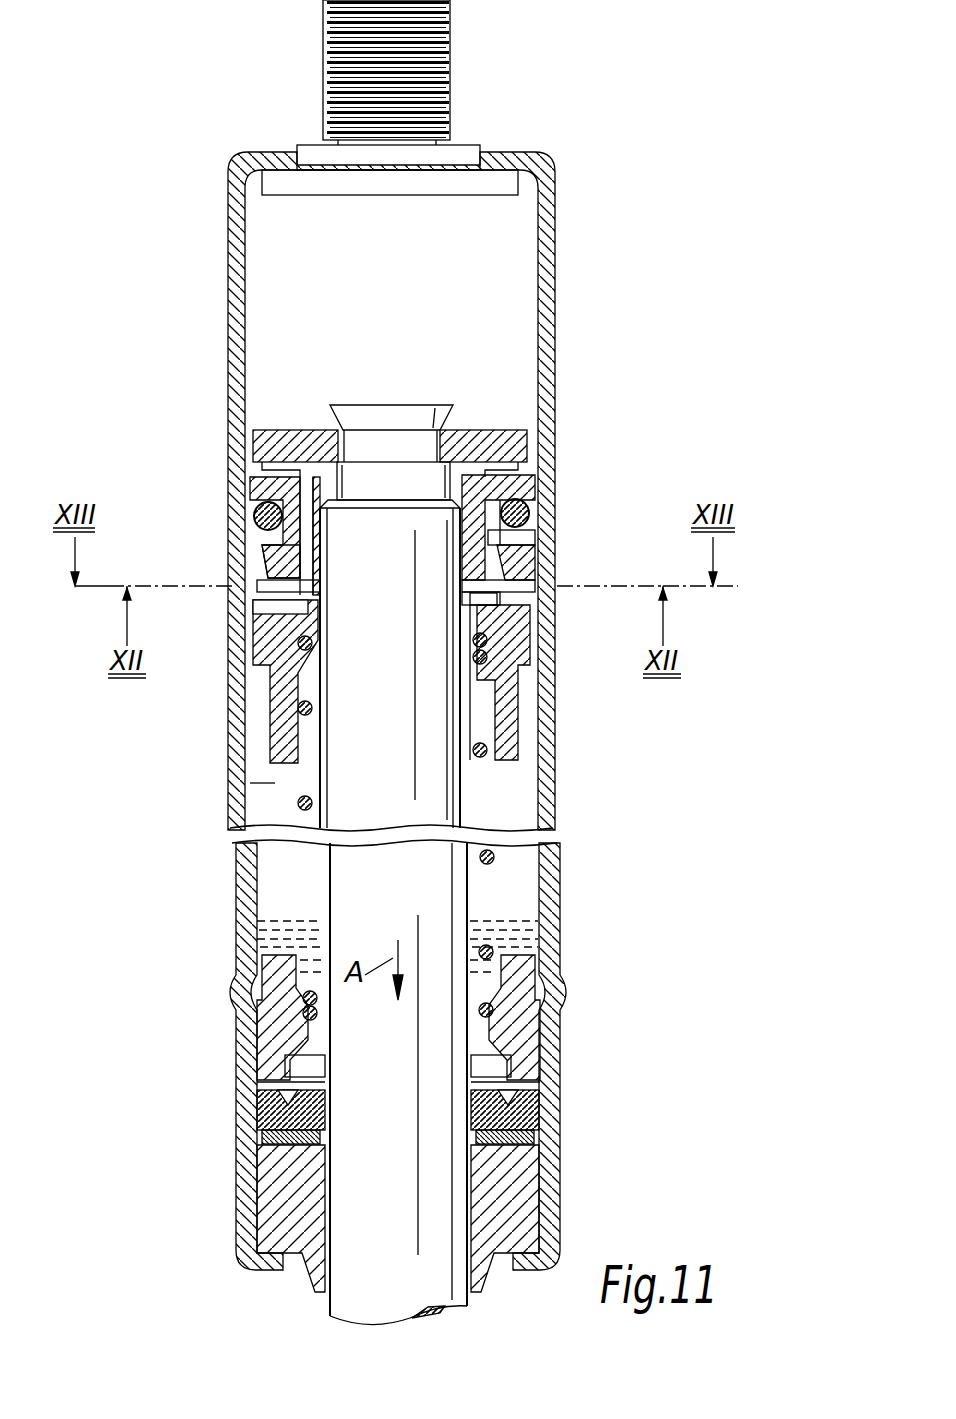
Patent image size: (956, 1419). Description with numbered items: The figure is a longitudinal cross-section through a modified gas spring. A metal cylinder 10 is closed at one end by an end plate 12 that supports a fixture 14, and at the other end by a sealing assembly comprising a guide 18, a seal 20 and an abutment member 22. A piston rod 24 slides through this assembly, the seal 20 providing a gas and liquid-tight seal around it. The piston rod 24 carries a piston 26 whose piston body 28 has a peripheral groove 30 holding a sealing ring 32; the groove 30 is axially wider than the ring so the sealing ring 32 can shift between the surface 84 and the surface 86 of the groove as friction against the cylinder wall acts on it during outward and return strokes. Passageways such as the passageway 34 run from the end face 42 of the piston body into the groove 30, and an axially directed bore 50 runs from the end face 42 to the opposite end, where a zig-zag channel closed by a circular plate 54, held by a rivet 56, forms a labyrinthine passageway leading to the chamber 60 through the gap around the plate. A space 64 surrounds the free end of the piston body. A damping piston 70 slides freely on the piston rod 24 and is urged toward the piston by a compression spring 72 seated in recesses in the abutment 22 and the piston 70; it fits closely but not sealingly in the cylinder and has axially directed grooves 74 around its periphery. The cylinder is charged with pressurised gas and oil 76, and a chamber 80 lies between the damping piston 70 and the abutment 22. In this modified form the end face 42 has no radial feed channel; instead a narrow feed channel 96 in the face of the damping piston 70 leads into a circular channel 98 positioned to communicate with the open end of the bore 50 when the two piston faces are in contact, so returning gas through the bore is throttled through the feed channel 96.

The cylinder 10 is at (540, 275).
The end plate 12 is at (452, 155).
The fixture 14 is at (450, 47).
The guide 18 is at (545, 1215).
The seal 20 is at (525, 1108).
The abutment member 22 is at (520, 1042).
The piston rod 24 is at (456, 906).
The piston 26 is at (478, 405).
The piston body 28 is at (520, 560).
The peripheral groove 30 is at (258, 522).
The sealing ring 32 is at (527, 512).
The passageway 34 is at (510, 576).
The end face 42 is at (500, 600).
The axially directed bore 50 is at (310, 483).
The circular plate 54 is at (502, 428).
The rivet 56 is at (356, 410).
The chamber 60 is at (272, 222).
The space 64 is at (276, 556).
The damping piston 70 is at (505, 690).
The compression spring 72 is at (494, 857).
The axially directed grooves 74 is at (478, 637).
The oil 76 is at (260, 933).
The chamber 80 is at (250, 783).
The surface 84 is at (535, 476).
The surface 86 is at (522, 540).
The feed channel 96 is at (270, 584).
The circular channel 98 is at (270, 625).